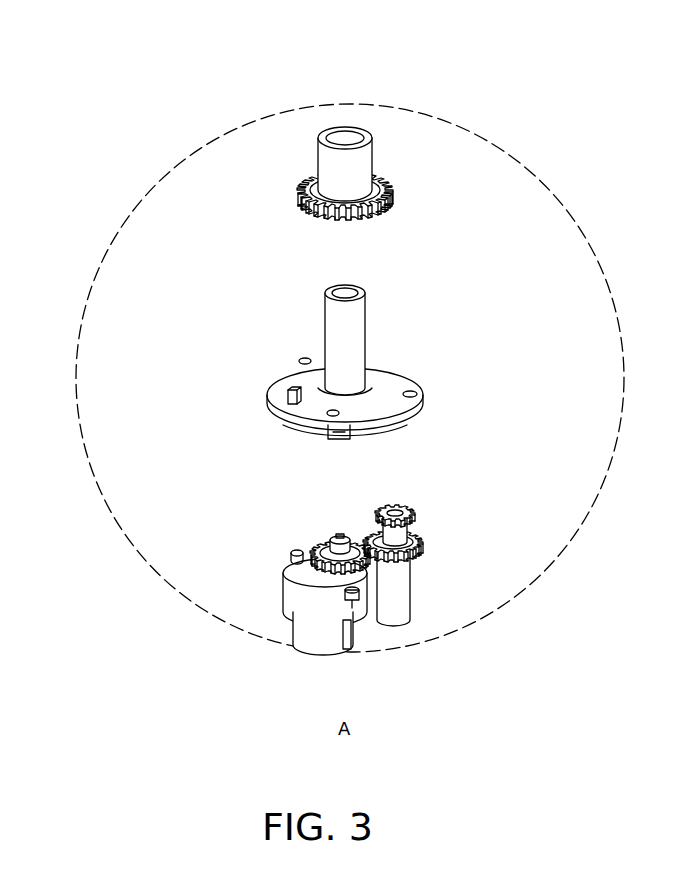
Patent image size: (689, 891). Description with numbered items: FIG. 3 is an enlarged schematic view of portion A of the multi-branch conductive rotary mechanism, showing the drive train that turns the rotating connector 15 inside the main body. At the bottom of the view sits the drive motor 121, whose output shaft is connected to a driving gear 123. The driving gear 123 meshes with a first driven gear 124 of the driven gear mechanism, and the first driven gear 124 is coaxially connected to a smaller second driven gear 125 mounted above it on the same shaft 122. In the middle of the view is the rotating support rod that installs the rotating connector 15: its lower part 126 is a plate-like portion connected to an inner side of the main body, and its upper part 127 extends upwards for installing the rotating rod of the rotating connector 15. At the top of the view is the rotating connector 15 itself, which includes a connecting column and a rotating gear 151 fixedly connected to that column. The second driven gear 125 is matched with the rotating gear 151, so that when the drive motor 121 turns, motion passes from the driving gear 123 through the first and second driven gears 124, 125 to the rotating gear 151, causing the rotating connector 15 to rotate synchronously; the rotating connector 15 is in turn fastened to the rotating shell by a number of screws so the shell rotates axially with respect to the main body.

The rotating connector 15 is at (237, 125).
The rotating gear 151 is at (307, 192).
The upper part of the rotating support rod 127 is at (345, 345).
The lower part of the rotating support rod 126 is at (278, 385).
The second driven gear 125 is at (413, 510).
The first driven gear 124 is at (423, 537).
The driving gear 123 is at (327, 567).
The shaft 122 is at (398, 583).
The drive motor 121 is at (308, 602).